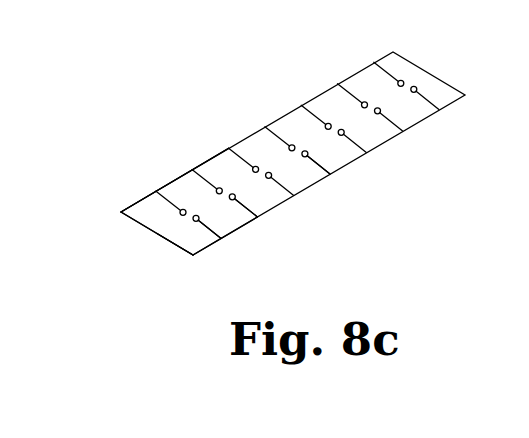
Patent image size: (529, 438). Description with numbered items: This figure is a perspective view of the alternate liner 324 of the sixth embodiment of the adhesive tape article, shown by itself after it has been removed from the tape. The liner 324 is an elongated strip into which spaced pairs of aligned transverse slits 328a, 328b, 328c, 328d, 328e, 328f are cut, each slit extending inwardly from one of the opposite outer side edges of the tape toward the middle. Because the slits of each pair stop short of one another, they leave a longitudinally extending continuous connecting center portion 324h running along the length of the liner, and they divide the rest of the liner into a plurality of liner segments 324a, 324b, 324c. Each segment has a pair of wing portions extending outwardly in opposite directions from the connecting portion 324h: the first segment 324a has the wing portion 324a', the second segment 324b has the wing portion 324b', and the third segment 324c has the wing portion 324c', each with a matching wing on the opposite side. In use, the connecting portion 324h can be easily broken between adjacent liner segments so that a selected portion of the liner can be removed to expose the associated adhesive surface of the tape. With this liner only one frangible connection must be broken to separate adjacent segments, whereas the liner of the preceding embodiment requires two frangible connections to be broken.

The liner 324 is at (259, 116).
The liner segment 324a is at (131, 239).
The wing portion 324a' is at (92, 207).
The liner segment 324b is at (183, 262).
The wing portion 324b' is at (110, 155).
The liner segment 324c is at (316, 217).
The wing portion 324c' is at (171, 121).
The connecting center portion 324h is at (403, 81).
The transverse slit 328a is at (136, 201).
The transverse slit 328b is at (210, 229).
The transverse slit 328c is at (181, 181).
The transverse slit 328d is at (247, 209).
The transverse slit 328e is at (222, 154).
The transverse slit 328f is at (331, 175).